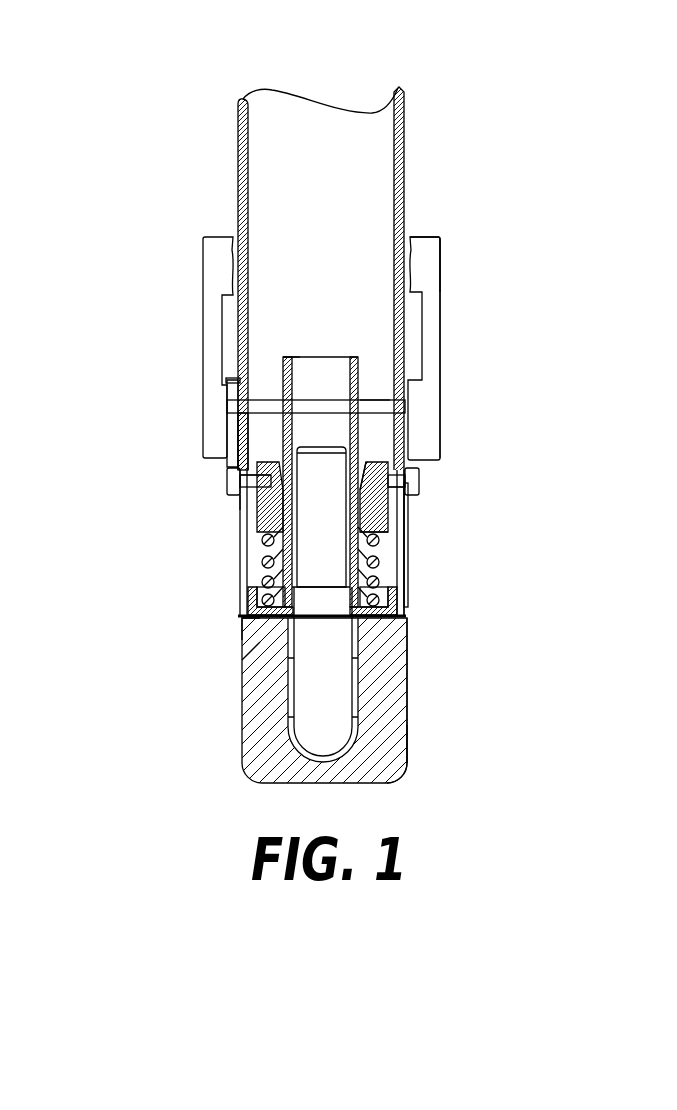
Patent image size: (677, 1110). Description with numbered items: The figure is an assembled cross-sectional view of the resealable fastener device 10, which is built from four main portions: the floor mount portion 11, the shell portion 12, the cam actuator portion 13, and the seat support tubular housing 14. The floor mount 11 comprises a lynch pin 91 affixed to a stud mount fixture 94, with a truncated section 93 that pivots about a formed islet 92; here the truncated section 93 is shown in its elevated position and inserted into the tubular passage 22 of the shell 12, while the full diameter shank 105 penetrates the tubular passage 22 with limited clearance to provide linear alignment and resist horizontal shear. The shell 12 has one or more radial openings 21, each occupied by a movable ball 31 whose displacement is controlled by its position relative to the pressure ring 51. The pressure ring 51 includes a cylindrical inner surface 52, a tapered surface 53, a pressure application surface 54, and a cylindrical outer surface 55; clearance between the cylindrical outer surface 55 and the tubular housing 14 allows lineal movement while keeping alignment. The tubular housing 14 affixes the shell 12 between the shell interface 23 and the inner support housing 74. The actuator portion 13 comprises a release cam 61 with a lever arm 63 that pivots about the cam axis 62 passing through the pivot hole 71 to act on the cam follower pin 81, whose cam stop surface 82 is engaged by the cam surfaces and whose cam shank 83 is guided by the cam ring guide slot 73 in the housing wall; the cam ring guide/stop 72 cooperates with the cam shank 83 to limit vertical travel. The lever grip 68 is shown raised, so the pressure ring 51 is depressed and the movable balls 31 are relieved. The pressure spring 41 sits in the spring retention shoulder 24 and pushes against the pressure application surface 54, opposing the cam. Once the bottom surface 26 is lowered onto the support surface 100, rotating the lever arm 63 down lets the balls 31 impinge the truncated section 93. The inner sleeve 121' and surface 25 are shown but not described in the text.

The resealable fastener device 10 is at (547, 596).
The floor mount portion 11 is at (467, 737).
The shell portion 12 is at (281, 369).
The cam actuator portion 13 is at (457, 365).
The seat support tubular housing 14 is at (404, 130).
The radial opening 21 is at (385, 510).
The tubular passage 22 is at (347, 368).
The shell interface 23 is at (407, 598).
The spring retention shoulder 24 is at (406, 575).
The crossbar top surface 25 is at (373, 398).
The bottom surface 26 is at (242, 635).
The movable ball 31 is at (418, 495).
The pressure spring 41 is at (407, 557).
The pressure ring 51 is at (257, 518).
The cylindrical inner surface 52 is at (293, 510).
The tapered surface 53 is at (361, 458).
The pressure application surface 54 is at (385, 545).
The cylindrical outer surface 55 is at (386, 530).
The release cam 61 is at (227, 403).
The cam axis 62 is at (265, 397).
The lever arm 63 is at (442, 298).
The lever grip 68 is at (435, 253).
The pivot hole 71 is at (240, 427).
The cam ring guide/stop 72 is at (426, 462).
The cam ring guide slot 73 is at (240, 565).
The inner support housing 74 is at (265, 545).
The cam follower pin 81 is at (227, 470).
The cam stop surface 82 is at (229, 470).
The cam shank 83 is at (250, 474).
The lynch pin 91 is at (360, 678).
The formed islet 92 is at (275, 730).
The truncated section 93 is at (242, 502).
The stud mount fixture 94 is at (410, 743).
The support surface 100 is at (245, 612).
The full diameter shank 105 is at (256, 645).
The inner sleeve 121' is at (400, 671).